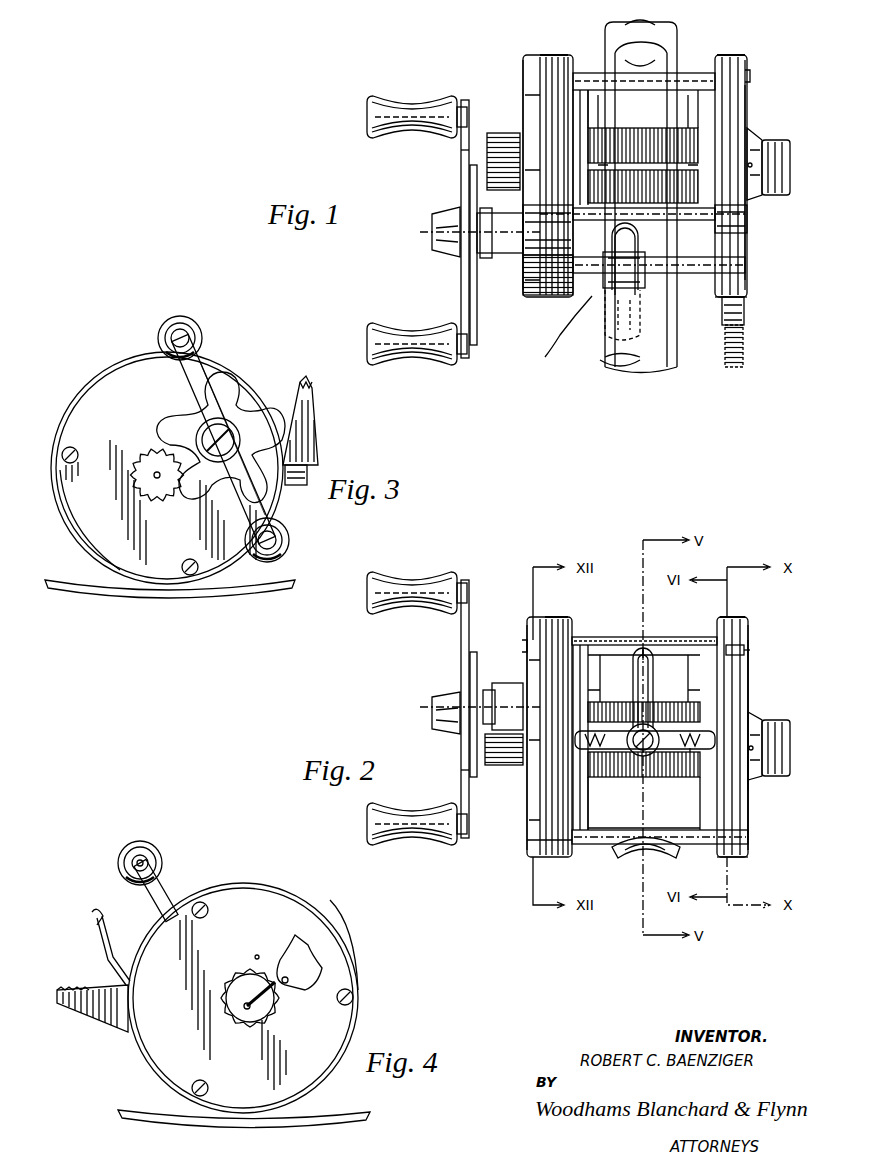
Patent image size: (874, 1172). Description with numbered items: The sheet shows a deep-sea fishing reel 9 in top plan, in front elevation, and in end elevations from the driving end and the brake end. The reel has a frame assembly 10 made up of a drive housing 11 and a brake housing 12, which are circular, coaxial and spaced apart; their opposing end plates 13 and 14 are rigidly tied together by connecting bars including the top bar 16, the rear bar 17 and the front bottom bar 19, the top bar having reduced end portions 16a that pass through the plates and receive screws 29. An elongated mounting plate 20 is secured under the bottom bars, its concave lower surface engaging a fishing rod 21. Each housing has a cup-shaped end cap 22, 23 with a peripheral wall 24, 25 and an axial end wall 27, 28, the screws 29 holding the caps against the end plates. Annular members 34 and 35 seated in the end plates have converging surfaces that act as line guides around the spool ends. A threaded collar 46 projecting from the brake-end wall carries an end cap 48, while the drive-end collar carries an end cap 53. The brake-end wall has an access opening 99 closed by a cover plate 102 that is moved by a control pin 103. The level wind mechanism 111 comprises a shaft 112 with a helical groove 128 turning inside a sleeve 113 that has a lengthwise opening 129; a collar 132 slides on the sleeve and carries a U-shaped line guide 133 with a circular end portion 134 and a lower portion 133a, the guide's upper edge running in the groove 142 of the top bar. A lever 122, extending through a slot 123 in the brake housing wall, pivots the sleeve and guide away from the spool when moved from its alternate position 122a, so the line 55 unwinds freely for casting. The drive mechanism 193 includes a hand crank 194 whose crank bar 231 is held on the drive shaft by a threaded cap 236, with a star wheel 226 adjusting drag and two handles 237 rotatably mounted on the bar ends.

In FIG. 1, the fishing reel 9 is at (433, 62).
In FIG. 3, the fishing reel 9 is at (120, 350).
In FIG. 2, the fishing reel 9 is at (480, 858).
In FIG. 4, the fishing reel 9 is at (188, 873).
In FIG. 1, the frame assembly 10 is at (748, 55).
In FIG. 2, the frame assembly 10 is at (752, 620).
In FIG. 1, the drive housing 11 is at (525, 55).
In FIG. 3, the drive housing 11 is at (90, 375).
In FIG. 2, the drive housing 11 is at (535, 865).
In FIG. 1, the brake housing 12 is at (752, 283).
In FIG. 2, the brake housing 12 is at (752, 847).
In FIG. 4, the brake housing 12 is at (265, 885).
In FIG. 1, the end plate 13 is at (570, 72).
In FIG. 2, the end plate 13 is at (580, 634).
In FIG. 1, the end plate 14 is at (707, 62).
In FIG. 2, the end plate 14 is at (715, 625).
In FIG. 1, the top connecting bar 16 is at (690, 212).
In FIG. 2, the top connecting bar 16 is at (638, 640).
In FIG. 1, the reduced-diameter end portion 16a is at (540, 213).
In FIG. 1, the rear connecting bar 17 is at (680, 80).
In FIG. 2, the front bottom connecting bar 19 is at (690, 845).
In FIG. 1, the mounting plate 20 is at (632, 60).
In FIG. 3, the mounting plate 20 is at (70, 592).
In FIG. 2, the mounting plate 20 is at (616, 852).
In FIG. 4, the mounting plate 20 is at (330, 1116).
In FIG. 1, the fishing rod 21 is at (620, 362).
In FIG. 1, the end cap 22 is at (527, 105).
In FIG. 3, the end cap 22 is at (152, 588).
In FIG. 2, the end cap 22 is at (527, 848).
In FIG. 1, the end cap 23 is at (742, 112).
In FIG. 2, the end cap 23 is at (750, 690).
In FIG. 4, the end cap 23 is at (352, 950).
In FIG. 1, the peripheral wall 24 is at (548, 58).
In FIG. 2, the peripheral wall 24 is at (548, 622).
In FIG. 1, the peripheral wall 25 is at (730, 58).
In FIG. 2, the peripheral wall 25 is at (735, 620).
In FIG. 3, the axial end wall 27 is at (183, 502).
In FIG. 4, the axial end wall 28 is at (233, 1002).
In FIG. 1, the screw 29 is at (750, 76).
In FIG. 3, the screw 29 is at (66, 463).
In FIG. 2, the screw 29 is at (525, 645).
In FIG. 4, the screw 29 is at (195, 920).
In FIG. 1, the annular member 34 is at (585, 118).
In FIG. 2, the annular member 34 is at (585, 682).
In FIG. 1, the annular member 35 is at (706, 123).
In FIG. 2, the annular member 35 is at (706, 683).
In FIG. 1, the externally threaded collar 46 is at (752, 140).
In FIG. 2, the externally threaded collar 46 is at (755, 720).
In FIG. 1, the end cap 48 is at (777, 140).
In FIG. 2, the end cap 48 is at (776, 765).
In FIG. 4, the end cap 48 is at (270, 1012).
In FIG. 1, the end cap 53 is at (496, 133).
In FIG. 3, the end cap 53 is at (160, 494).
In FIG. 2, the end cap 53 is at (505, 768).
In FIG. 1, the line 55 is at (555, 345).
In FIG. 4, the access opening 99 is at (295, 935).
In FIG. 4, the cover plate 102 is at (290, 945).
In FIG. 4, the control pin 103 is at (280, 980).
In FIG. 3, the level wind mechanism 111 is at (303, 465).
In FIG. 2, the level wind mechanism 111 is at (690, 778).
In FIG. 2, the shaft 112 is at (607, 776).
In FIG. 1, the sleeve 113 is at (590, 262).
In FIG. 2, the sleeve 113 is at (598, 732).
In FIG. 1, the lever 122 is at (738, 312).
In FIG. 3, the lever 122 is at (302, 396).
In FIG. 2, the lever 122 is at (736, 650).
In FIG. 4, the lever 122 is at (73, 1010).
In FIG. 1, the broken line lever position 122a is at (722, 372).
In FIG. 2, the peripherally elongated slot 123 is at (730, 762).
In FIG. 2, the helical groove 128 is at (662, 780).
In FIG. 2, the lengthwise opening 129 is at (660, 738).
In FIG. 1, the collar 132 is at (635, 285).
In FIG. 2, the collar 132 is at (645, 770).
In FIG. 2, the line guide 133 is at (650, 668).
In FIG. 4, the line guide 133 is at (100, 950).
In FIG. 1, the line guide lower portion 133a is at (595, 355).
In FIG. 1, the circular portion 134 is at (640, 250).
In FIG. 2, the circular portion 134 is at (648, 648).
In FIG. 4, the circular portion 134 is at (95, 912).
In FIG. 2, the lengthwise groove 142 is at (590, 646).
In FIG. 1, the drive mechanism 193 is at (440, 255).
In FIG. 3, the drive mechanism 193 is at (237, 400).
In FIG. 2, the drive mechanism 193 is at (425, 712).
In FIG. 1, the hand crank 194 is at (459, 313).
In FIG. 3, the hand crank 194 is at (182, 378).
In FIG. 2, the hand crank 194 is at (459, 640).
In FIG. 4, the hand crank 194 is at (118, 845).
In FIG. 1, the star wheel 226 is at (473, 300).
In FIG. 3, the star wheel 226 is at (158, 425).
In FIG. 2, the star wheel 226 is at (476, 640).
In FIG. 1, the crank bar 231 is at (460, 155).
In FIG. 3, the crank bar 231 is at (243, 513).
In FIG. 2, the crank bar 231 is at (462, 770).
In FIG. 4, the crank bar 231 is at (157, 893).
In FIG. 1, the cap 236 is at (438, 230).
In FIG. 3, the cap 236 is at (222, 462).
In FIG. 2, the cap 236 is at (445, 700).
In FIG. 1, the handle 237 is at (372, 108).
In FIG. 3, the handle 237 is at (180, 322).
In FIG. 2, the handle 237 is at (370, 598).